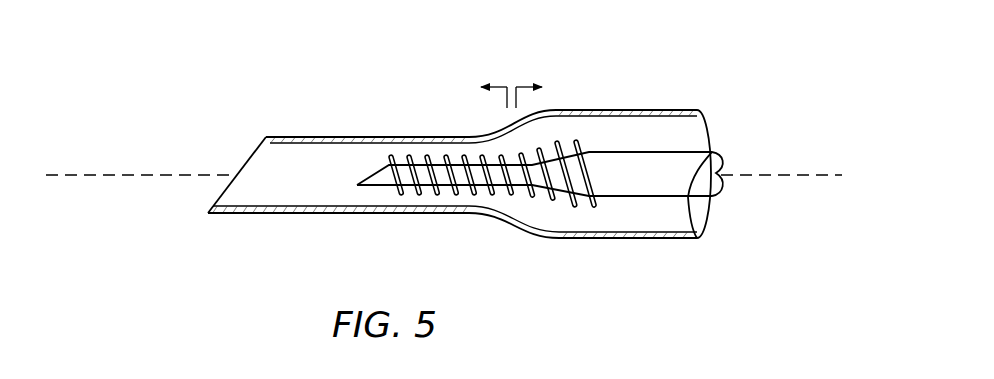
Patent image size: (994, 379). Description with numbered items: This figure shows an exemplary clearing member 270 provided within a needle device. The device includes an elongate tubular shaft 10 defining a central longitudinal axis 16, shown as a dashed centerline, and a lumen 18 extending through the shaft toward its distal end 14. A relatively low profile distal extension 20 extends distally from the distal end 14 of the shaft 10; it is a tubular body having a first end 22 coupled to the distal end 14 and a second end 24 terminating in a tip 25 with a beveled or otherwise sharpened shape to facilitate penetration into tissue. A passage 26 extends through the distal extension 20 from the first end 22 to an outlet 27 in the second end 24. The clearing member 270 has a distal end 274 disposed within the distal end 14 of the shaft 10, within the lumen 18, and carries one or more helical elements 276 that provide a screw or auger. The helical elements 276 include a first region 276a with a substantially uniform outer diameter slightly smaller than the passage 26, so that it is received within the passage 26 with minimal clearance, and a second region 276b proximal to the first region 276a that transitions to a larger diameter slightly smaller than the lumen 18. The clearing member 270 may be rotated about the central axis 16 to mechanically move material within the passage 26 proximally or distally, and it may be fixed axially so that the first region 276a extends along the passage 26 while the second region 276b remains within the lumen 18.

The shaft 10 is at (452, 150).
The distal end 14 is at (607, 107).
The central longitudinal axis 16 is at (87, 175).
The lumen 18 is at (612, 228).
The distal extension 20 is at (322, 162).
The first end 22 is at (467, 137).
The second end 24 is at (279, 136).
The tip 25 is at (217, 213).
The passage 26 is at (333, 209).
The outlet 27 is at (246, 158).
The clearing member 270 is at (540, 181).
The distal end 274 is at (650, 151).
The helical elements 276 is at (512, 188).
The first region 276a is at (474, 81).
The second region 276b is at (548, 81).